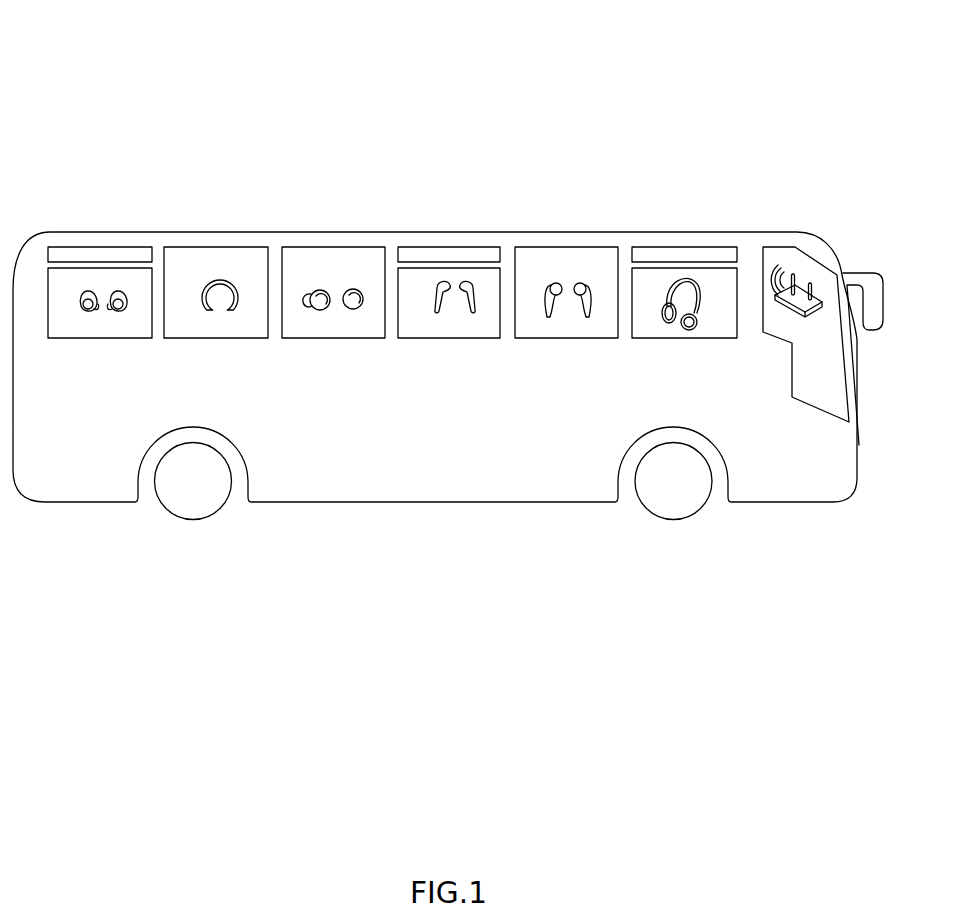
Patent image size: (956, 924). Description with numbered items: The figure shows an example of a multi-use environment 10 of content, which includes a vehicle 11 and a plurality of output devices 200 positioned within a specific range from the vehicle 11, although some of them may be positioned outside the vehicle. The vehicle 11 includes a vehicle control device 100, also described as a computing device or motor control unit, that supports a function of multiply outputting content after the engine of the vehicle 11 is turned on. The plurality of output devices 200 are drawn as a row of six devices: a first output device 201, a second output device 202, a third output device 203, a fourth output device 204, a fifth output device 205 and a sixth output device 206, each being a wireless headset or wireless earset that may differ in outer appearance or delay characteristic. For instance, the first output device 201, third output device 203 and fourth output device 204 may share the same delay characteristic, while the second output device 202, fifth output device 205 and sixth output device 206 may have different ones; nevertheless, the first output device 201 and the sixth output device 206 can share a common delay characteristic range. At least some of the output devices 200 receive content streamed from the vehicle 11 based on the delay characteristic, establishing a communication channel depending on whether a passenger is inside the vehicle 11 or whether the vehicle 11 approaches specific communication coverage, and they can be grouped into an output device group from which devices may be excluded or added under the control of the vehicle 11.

The multi-use environment 10 is at (133, 25).
The vehicle 11 is at (743, 231).
The vehicle control device 100 is at (802, 294).
The plurality of output devices 200 is at (688, 170).
The first output device 201 is at (105, 286).
The second output device 202 is at (214, 284).
The third output device 203 is at (335, 288).
The fourth output device 204 is at (452, 285).
The fifth output device 205 is at (567, 287).
The sixth output device 206 is at (680, 277).